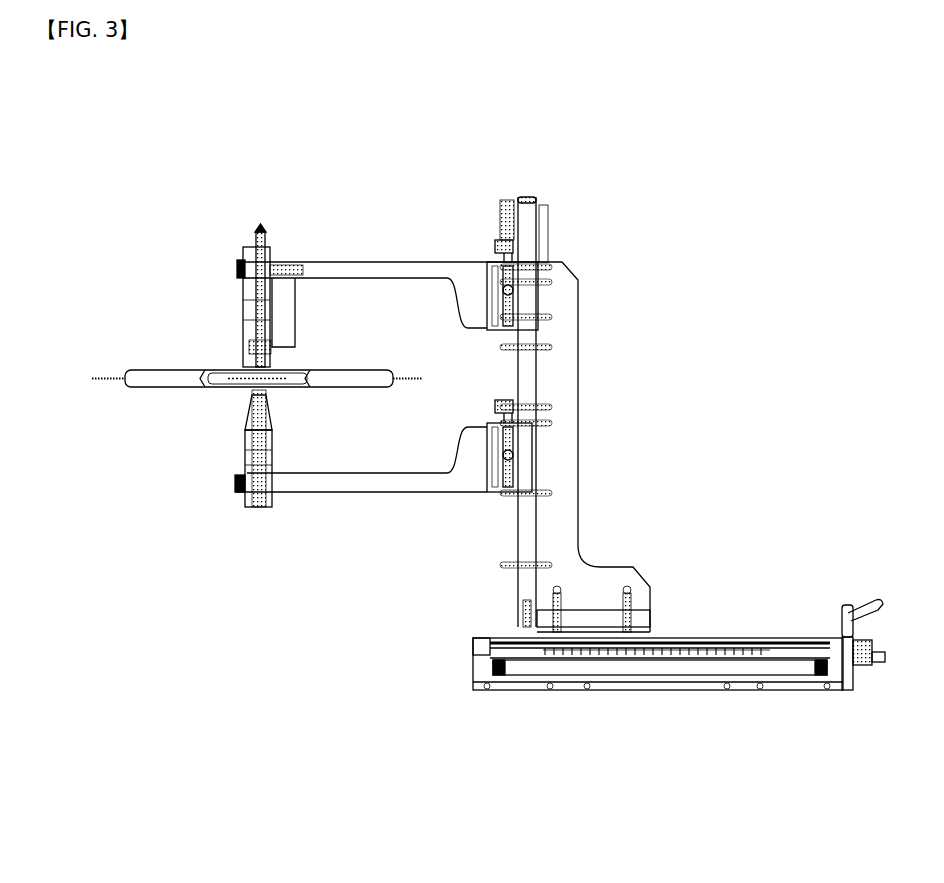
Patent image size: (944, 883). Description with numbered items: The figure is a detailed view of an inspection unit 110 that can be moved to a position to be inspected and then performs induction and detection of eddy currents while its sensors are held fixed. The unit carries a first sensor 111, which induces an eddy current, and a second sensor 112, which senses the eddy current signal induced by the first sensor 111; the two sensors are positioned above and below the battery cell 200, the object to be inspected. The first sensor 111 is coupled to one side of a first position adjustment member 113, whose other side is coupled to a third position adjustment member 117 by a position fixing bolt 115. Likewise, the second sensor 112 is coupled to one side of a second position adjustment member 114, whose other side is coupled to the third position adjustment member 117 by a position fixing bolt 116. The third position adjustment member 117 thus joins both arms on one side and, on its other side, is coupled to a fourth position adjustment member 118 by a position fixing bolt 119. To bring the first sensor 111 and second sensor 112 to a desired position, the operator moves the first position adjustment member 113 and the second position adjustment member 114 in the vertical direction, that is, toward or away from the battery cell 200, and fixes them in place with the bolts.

The inspection unit 110 is at (142, 172).
The first sensor 111 is at (268, 258).
The second sensor 112 is at (250, 450).
The first position adjustment member 113 is at (382, 274).
The second position adjustment member 114 is at (394, 483).
The position fixing bolt 115 is at (508, 280).
The position fixing bolt 116 is at (532, 460).
The third position adjustment member 117 is at (565, 380).
The fourth position adjustment member 118 is at (792, 650).
The position fixing bolt 119 is at (632, 662).
The battery cell 200 is at (157, 372).